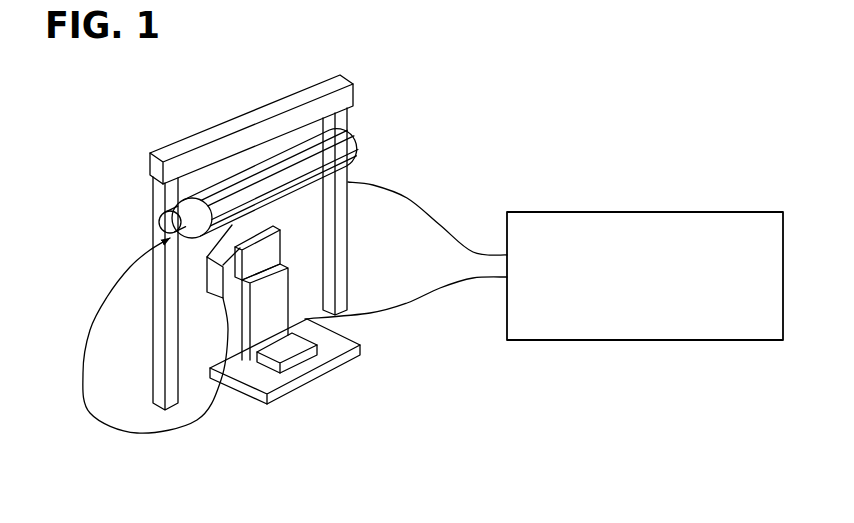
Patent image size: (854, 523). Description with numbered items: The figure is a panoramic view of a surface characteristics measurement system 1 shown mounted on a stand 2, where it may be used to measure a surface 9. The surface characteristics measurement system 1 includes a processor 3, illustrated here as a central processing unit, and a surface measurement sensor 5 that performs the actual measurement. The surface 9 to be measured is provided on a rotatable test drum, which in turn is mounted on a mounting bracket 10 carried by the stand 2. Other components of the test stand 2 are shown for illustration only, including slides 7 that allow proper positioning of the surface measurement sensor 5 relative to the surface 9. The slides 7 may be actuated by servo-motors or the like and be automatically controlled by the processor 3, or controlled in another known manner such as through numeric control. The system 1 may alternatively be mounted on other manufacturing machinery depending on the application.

The surface characteristics measurement system 1 is at (433, 412).
The stand 2 is at (360, 72).
The processor 3 is at (718, 207).
The surface measurement sensor 5 is at (278, 221).
The slides 7 is at (290, 253).
The surface 9 is at (346, 166).
The mounting bracket 10 is at (212, 128).